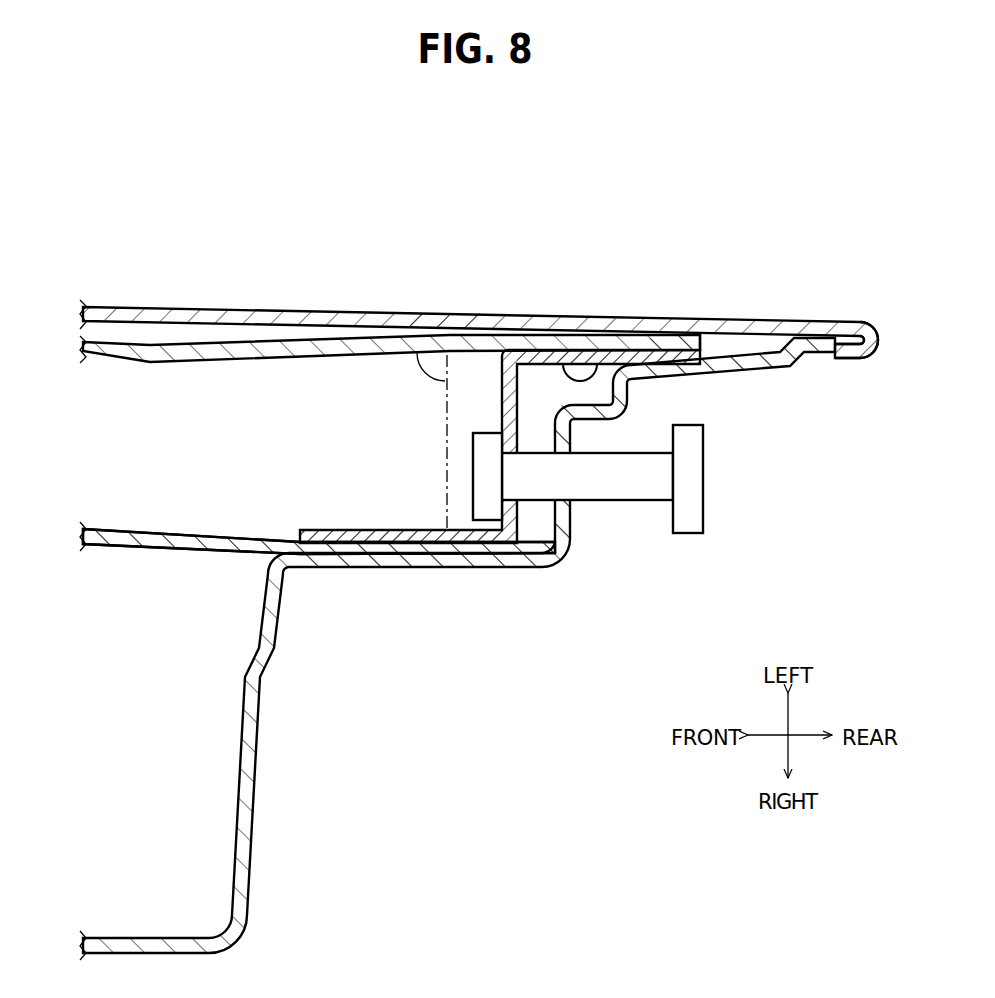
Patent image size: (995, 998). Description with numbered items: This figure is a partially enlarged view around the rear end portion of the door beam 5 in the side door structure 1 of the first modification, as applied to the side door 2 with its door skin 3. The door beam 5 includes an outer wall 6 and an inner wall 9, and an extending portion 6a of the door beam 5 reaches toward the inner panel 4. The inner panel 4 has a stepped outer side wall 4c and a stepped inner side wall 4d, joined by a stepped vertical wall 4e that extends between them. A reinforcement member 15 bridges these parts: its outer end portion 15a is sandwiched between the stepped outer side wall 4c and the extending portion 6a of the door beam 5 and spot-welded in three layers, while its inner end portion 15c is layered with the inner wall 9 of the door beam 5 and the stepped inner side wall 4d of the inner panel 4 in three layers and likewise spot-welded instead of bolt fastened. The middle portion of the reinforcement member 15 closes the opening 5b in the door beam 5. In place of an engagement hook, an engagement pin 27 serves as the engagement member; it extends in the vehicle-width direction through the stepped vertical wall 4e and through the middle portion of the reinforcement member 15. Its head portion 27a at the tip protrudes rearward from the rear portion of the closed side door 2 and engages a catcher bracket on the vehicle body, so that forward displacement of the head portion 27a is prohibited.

The side door structure 1 is at (800, 278).
The side door 2 is at (877, 334).
The door skin 3 is at (187, 307).
The inner panel 4 is at (250, 805).
The stepped outer side wall 4c is at (768, 373).
The stepped inner side wall 4d is at (381, 568).
The stepped vertical wall 4e is at (573, 531).
The door beam 5 is at (163, 547).
The opening 5b is at (437, 315).
The outer wall 6 is at (217, 364).
The extending portion 6a is at (717, 322).
The inner wall 9 is at (319, 541).
The reinforcement member 15 is at (430, 428).
The outer end portion 15a is at (572, 360).
The inner end portion 15c is at (372, 529).
The engagement pin 27 is at (625, 503).
The head portion 27a is at (690, 477).